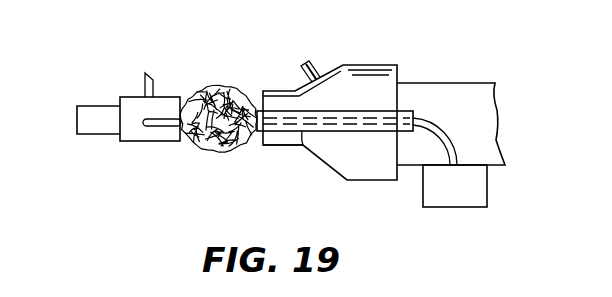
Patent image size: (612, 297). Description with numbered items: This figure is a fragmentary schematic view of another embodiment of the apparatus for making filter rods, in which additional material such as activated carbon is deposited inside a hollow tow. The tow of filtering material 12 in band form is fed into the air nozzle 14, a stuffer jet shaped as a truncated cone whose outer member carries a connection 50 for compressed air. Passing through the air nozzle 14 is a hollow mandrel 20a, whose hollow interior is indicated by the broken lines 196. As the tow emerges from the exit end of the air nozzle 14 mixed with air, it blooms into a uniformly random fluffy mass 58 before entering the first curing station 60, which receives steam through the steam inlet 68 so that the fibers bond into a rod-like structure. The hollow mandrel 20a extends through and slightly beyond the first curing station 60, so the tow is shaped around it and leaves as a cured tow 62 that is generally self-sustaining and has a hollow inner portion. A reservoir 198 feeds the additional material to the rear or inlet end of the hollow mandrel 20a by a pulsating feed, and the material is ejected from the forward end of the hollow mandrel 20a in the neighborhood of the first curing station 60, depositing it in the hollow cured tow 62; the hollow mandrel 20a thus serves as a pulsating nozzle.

The tow of filtering material 12 is at (473, 90).
The air nozzle 14 is at (348, 165).
The hollow mandrel 20a is at (303, 148).
The connection for compressed air 50 is at (310, 60).
The fluffy mass 58 is at (207, 153).
The first curing station 60 is at (158, 141).
The cured tow 62 is at (107, 127).
The steam inlet 68 is at (154, 84).
The broken lines 196 is at (286, 98).
The reservoir 198 is at (455, 201).